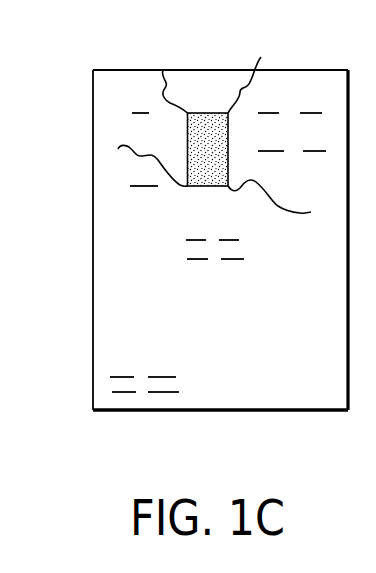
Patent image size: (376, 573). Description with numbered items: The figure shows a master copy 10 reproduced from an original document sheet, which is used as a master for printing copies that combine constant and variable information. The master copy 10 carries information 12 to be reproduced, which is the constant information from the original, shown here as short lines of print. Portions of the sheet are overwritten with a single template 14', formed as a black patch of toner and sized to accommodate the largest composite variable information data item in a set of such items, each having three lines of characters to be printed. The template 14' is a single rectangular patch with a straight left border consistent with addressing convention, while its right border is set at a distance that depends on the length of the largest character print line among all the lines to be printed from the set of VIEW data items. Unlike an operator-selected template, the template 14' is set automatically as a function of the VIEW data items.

The master copy 10 is at (62, 62).
The information 12 is at (140, 336).
The template 14' is at (215, 117).